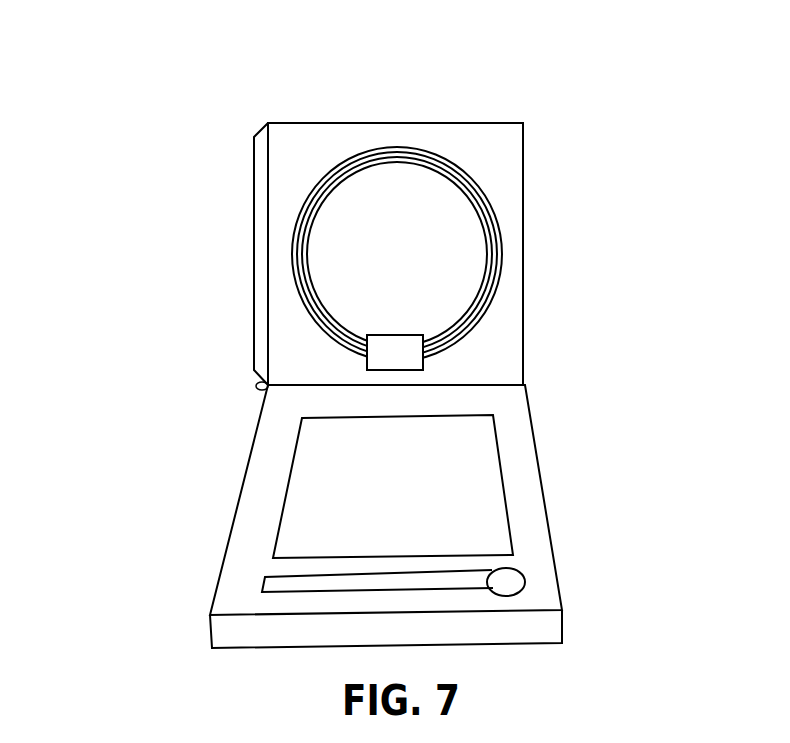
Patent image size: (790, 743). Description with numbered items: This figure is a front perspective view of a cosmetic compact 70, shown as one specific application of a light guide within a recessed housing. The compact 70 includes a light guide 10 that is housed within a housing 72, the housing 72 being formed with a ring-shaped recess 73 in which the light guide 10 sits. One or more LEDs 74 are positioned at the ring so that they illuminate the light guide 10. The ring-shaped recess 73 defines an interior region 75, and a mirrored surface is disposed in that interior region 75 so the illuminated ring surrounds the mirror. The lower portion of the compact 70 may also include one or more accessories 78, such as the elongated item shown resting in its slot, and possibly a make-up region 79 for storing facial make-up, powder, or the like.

The cosmetic compact 70 is at (172, 304).
The housing 72 is at (283, 151).
The light guide 10 is at (427, 162).
The ring-shaped recess 73 is at (357, 155).
The LEDs 74 is at (395, 352).
The interior region 75 is at (428, 253).
The accessories 78 is at (467, 590).
The make-up region 79 is at (423, 500).